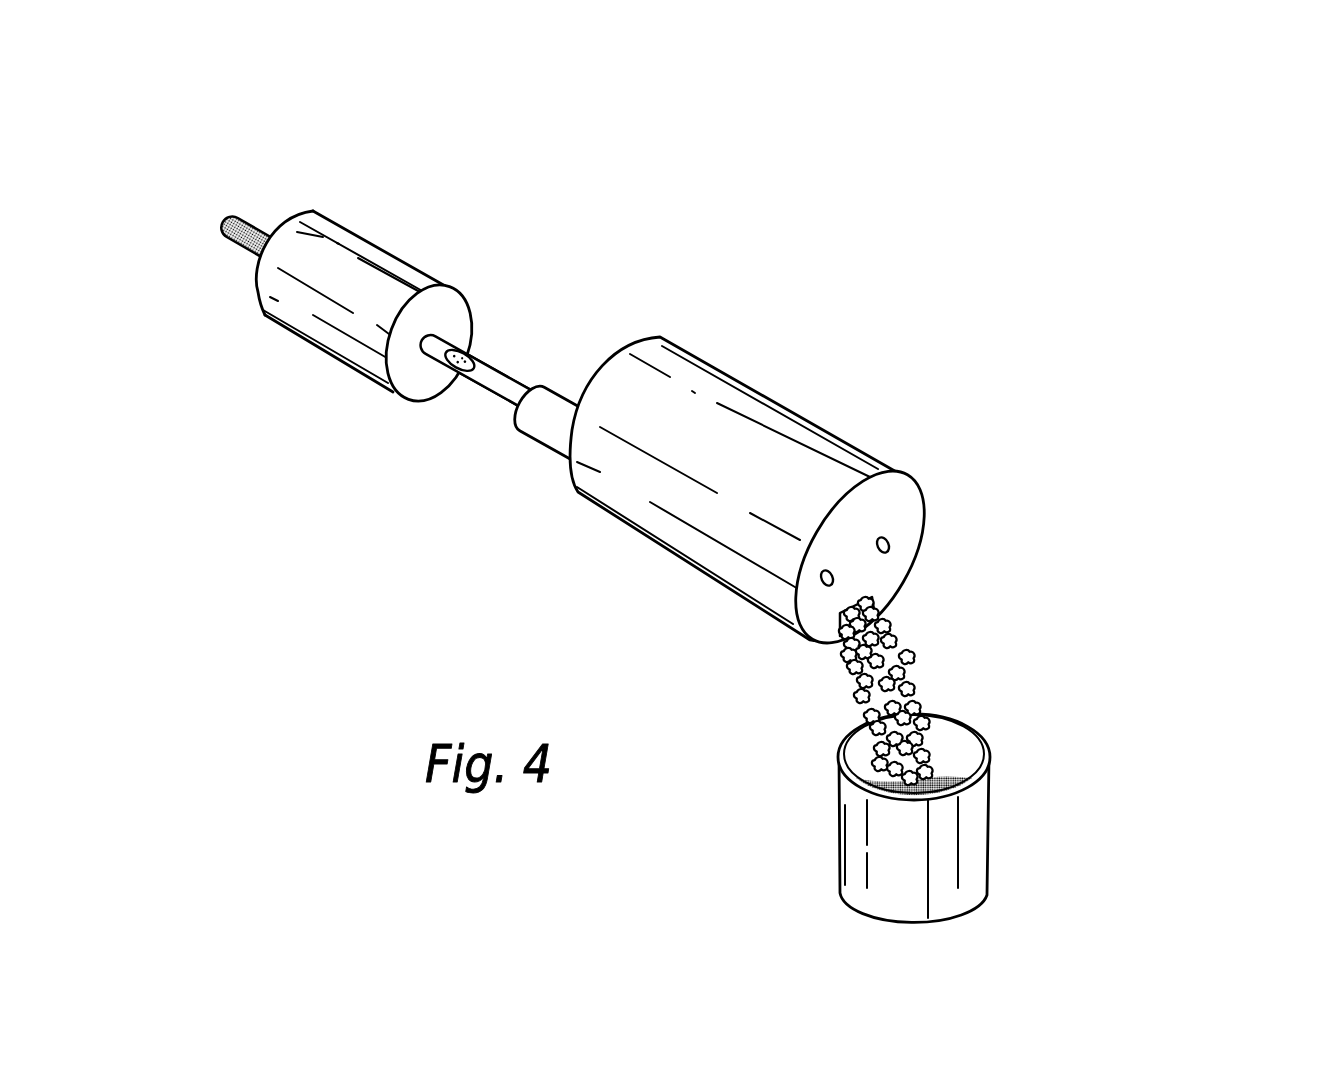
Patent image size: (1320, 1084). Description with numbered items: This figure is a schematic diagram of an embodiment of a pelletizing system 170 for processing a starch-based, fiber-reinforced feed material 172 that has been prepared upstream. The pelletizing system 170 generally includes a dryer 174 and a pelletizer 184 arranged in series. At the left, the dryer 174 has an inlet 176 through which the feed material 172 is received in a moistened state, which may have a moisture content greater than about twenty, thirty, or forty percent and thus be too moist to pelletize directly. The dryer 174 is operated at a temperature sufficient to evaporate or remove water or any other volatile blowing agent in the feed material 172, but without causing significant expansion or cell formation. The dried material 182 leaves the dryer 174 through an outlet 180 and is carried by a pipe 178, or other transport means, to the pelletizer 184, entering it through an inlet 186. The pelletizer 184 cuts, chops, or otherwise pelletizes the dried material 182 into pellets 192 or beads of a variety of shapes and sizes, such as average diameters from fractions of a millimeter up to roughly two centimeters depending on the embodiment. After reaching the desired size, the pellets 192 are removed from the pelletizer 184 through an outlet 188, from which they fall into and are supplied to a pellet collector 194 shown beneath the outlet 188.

The pelletizing system 170 is at (1093, 113).
The feed material 172 is at (240, 244).
The dryer 174 is at (358, 267).
The inlet 176 is at (278, 238).
The pipe 178 is at (507, 383).
The outlet 180 is at (395, 392).
The dried material 182 is at (470, 353).
The pelletizer 184 is at (676, 357).
The inlet 186 is at (547, 433).
The outlet 188 is at (874, 597).
The pellets 192 is at (891, 641).
The pellet collector 194 is at (950, 747).